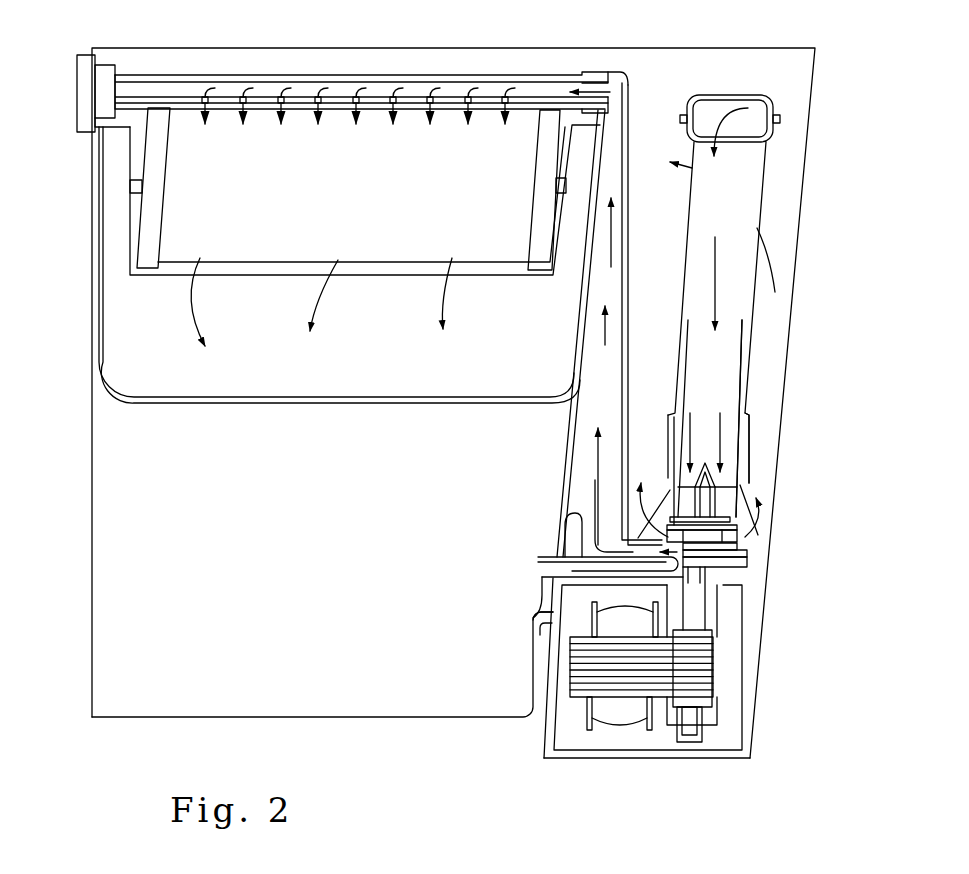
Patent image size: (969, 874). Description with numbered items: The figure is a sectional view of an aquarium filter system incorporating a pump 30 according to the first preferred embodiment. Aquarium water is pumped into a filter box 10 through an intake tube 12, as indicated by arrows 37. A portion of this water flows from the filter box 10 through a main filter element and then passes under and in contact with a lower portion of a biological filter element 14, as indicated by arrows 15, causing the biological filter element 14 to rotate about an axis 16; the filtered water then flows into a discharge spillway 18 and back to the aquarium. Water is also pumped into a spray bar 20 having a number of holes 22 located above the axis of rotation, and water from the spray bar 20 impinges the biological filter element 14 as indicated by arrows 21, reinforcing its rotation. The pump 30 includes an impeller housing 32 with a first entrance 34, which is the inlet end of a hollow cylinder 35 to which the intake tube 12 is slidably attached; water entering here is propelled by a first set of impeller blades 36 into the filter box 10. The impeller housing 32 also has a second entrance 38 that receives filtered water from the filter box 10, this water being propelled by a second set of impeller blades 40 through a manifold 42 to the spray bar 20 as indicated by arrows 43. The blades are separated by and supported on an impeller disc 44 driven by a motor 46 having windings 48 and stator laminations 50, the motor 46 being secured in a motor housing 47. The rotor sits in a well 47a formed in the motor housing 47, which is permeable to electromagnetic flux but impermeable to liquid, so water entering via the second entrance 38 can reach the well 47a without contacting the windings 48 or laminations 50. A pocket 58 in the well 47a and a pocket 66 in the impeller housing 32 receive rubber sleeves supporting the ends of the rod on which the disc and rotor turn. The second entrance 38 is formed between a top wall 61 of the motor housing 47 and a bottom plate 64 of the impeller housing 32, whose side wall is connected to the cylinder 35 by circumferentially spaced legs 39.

The filter box 10 is at (808, 128).
The intake tube 12 is at (743, 212).
The biological filter element 14 is at (187, 197).
The arrows 15 is at (373, 360).
The axis 16 is at (131, 183).
The discharge spillway 18 is at (158, 382).
The spray bar 20 is at (306, 93).
The arrows 21 is at (419, 197).
The holes 22 is at (358, 93).
The pump 30 is at (818, 439).
The impeller housing 32 is at (736, 458).
The first entrance 34 is at (747, 417).
The hollow cylinder 35 is at (672, 440).
The first set of impeller blades 36 is at (742, 538).
The arrows 37 is at (715, 283).
The second entrance 38 is at (559, 568).
The legs 39 is at (740, 525).
The second set of impeller blades 40 is at (748, 552).
The manifold 42 is at (627, 133).
The arrows 43 is at (538, 578).
The impeller disc 44 is at (673, 533).
The motor 46 is at (810, 606).
The motor housing 47 is at (752, 600).
The well 47a is at (715, 635).
The windings 48 is at (622, 727).
The stator laminations 50 is at (700, 657).
The pocket 58 is at (688, 760).
The top wall 61 is at (543, 600).
The bottom plate 64 is at (568, 515).
The pocket 66 is at (716, 470).